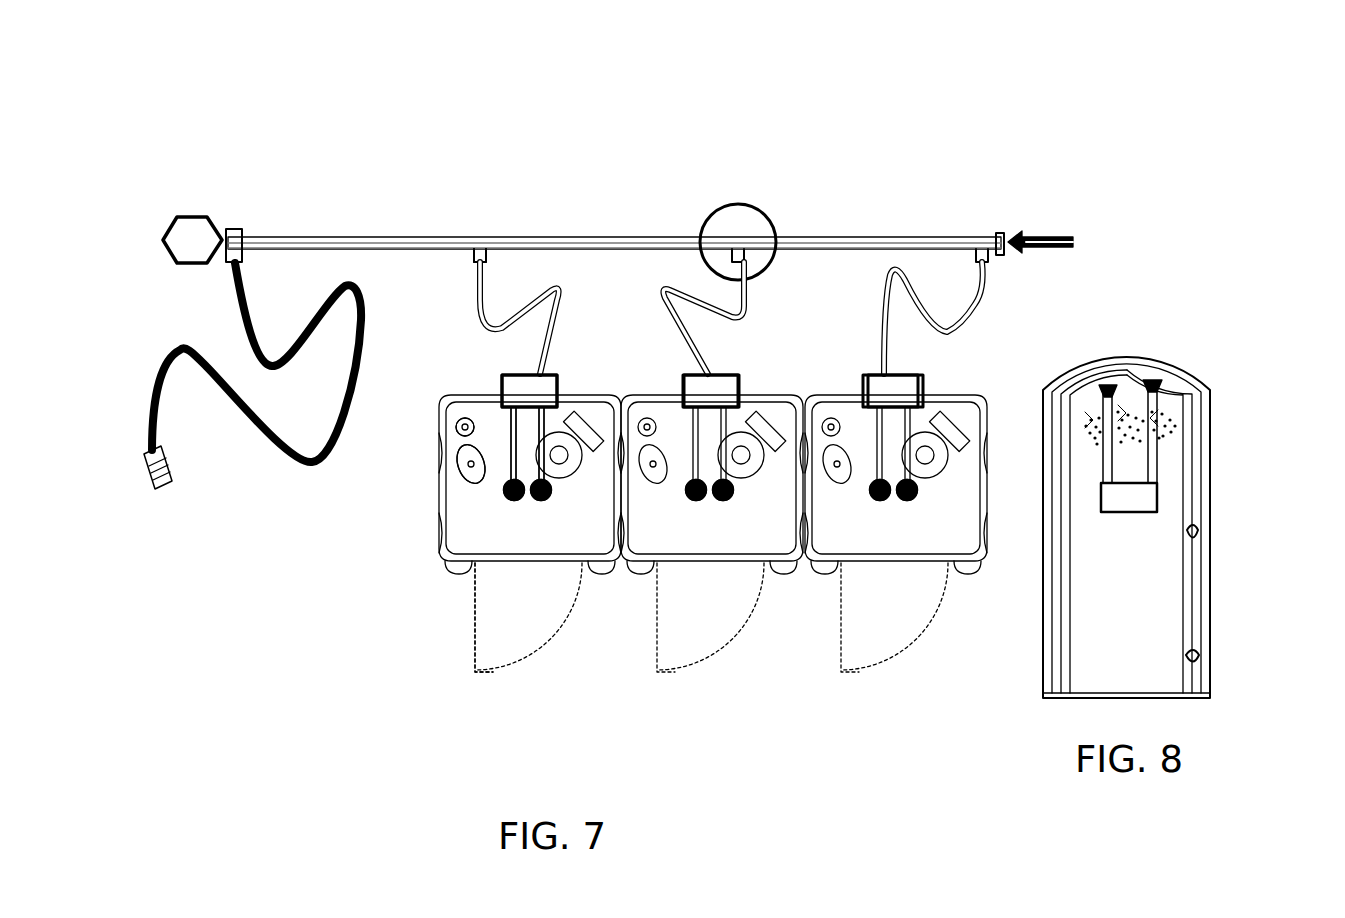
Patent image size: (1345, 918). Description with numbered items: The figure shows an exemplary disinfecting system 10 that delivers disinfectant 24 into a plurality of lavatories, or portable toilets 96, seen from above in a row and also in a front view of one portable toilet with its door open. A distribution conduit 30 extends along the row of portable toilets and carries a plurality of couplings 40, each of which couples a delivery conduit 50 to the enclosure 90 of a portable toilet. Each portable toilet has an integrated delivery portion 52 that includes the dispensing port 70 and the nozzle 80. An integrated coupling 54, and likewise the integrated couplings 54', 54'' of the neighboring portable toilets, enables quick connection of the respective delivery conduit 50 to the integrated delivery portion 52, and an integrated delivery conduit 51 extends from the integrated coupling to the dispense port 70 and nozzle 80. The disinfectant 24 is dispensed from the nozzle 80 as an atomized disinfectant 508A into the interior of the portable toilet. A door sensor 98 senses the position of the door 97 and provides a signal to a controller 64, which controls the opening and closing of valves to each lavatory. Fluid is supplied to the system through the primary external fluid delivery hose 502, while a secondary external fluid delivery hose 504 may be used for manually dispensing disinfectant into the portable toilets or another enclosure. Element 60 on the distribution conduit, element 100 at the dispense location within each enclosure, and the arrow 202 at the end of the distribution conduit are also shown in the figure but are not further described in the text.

In FIG. 7, the disinfecting system 10 is at (449, 144).
In FIG. 7, the distribution conduit 30 is at (628, 248).
In FIG. 7, the coupling 40 is at (745, 250).
In FIG. 7, the delivery conduit 50 is at (565, 293).
In FIG. 7, the integrated delivery conduit 51 is at (503, 462).
In FIG. 7, the integrated delivery portion 52 is at (560, 393).
In FIG. 8, the integrated delivery portion 52 is at (1117, 384).
In FIG. 7, the integrated coupling 54 is at (495, 376).
In FIG. 8, the integrated coupling 54 is at (1076, 456).
In FIG. 7, the integrated coupling 54' is at (744, 361).
In FIG. 7, the integrated coupling 54'' is at (867, 371).
In FIG. 7, the rail clamp 60 is at (497, 250).
In FIG. 7, the controller 64 is at (200, 240).
In FIG. 7, the dispensing port 70 is at (697, 503).
In FIG. 8, the dispensing port 70 is at (1163, 376).
In FIG. 7, the nozzle 80 is at (878, 503).
In FIG. 8, the nozzle 80 is at (1190, 374).
In FIG. 7, the enclosure 90 is at (566, 540).
In FIG. 7, the portable toilet 96 is at (742, 523).
In FIG. 8, the portable toilet 96 is at (1175, 548).
In FIG. 7, the door 97 is at (475, 637).
In FIG. 7, the door sensor 98 is at (455, 556).
In FIG. 7, the dispensing nozzle 100 is at (500, 497).
In FIG. 8, the dispensing nozzle 100 is at (1103, 523).
In FIG. 7, the flow direction arrow 202 is at (1040, 243).
In FIG. 7, the primary external fluid delivery hose 502 is at (562, 250).
In FIG. 7, the secondary external fluid delivery hose 504 is at (238, 290).
In FIG. 8, the atomized disinfectant 508A is at (1100, 417).
In FIG. 8, the disinfectant 24 is at (1123, 438).